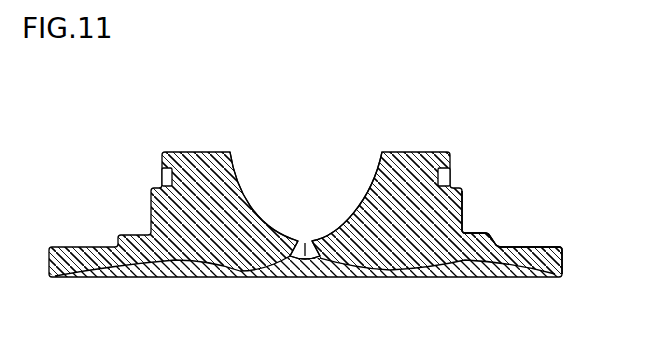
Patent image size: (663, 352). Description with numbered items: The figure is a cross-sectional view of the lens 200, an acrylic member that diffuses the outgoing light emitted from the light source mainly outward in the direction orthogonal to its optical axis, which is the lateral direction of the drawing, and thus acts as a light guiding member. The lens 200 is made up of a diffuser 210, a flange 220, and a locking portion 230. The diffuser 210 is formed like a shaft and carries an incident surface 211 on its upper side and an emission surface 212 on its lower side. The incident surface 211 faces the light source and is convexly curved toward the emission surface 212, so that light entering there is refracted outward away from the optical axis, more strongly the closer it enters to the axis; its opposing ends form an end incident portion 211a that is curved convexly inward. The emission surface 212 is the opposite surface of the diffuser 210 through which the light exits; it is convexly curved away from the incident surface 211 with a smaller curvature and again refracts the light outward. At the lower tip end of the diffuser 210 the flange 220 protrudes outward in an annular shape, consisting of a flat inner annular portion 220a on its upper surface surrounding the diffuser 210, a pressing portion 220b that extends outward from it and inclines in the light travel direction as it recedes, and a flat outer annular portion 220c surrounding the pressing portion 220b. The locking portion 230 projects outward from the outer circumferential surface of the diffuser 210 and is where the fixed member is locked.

The lens 200 is at (353, 72).
The diffuser 210 is at (413, 167).
The incident surface 211 is at (243, 190).
The end incident portion 211a is at (227, 152).
The emission surface 212 is at (180, 268).
The flange 220 is at (630, 108).
The inner annular portion 220a is at (481, 233).
The pressing portion 220b is at (503, 243).
The outer annular portion 220c is at (533, 244).
The locking portion 230 is at (461, 185).